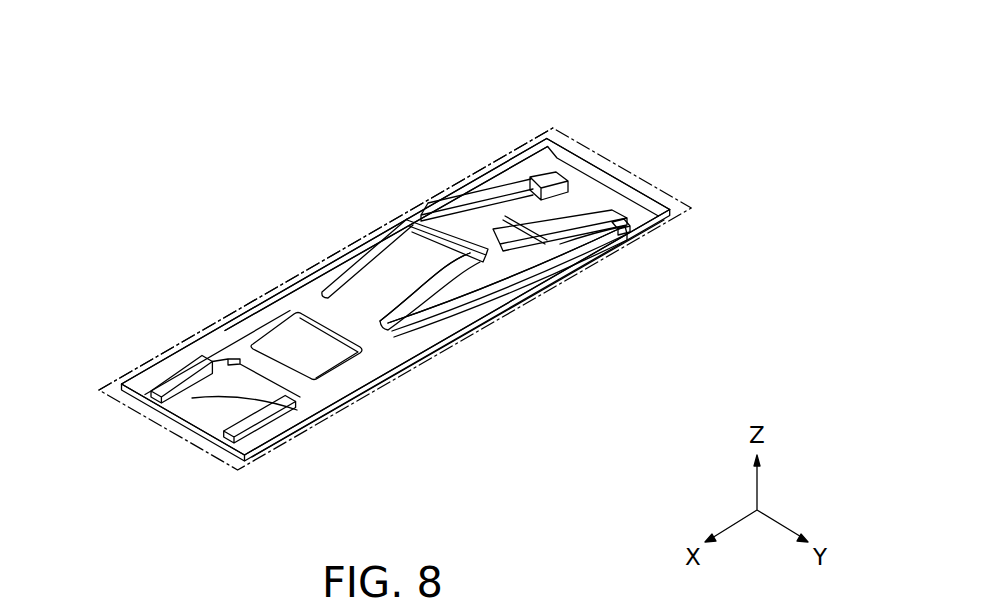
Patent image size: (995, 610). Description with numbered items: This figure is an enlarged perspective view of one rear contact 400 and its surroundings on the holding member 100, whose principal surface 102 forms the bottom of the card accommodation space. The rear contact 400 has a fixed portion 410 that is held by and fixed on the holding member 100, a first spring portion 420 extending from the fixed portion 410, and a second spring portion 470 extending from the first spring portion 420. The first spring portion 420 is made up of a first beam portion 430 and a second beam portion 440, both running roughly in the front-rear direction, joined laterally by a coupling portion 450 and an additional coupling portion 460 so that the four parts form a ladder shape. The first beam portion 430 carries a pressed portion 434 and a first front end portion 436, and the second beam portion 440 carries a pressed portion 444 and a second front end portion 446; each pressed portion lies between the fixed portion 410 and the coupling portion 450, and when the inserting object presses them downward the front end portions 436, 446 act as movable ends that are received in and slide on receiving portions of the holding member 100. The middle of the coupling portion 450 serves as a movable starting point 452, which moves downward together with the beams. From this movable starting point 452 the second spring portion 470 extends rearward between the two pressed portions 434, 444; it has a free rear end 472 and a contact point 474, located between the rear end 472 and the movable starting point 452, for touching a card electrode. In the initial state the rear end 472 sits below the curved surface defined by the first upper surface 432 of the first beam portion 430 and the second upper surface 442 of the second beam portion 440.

The holding member 100 is at (667, 193).
The principal surface 102 is at (436, 259).
The rear contact 400 is at (533, 175).
The fixed portion 410 is at (617, 185).
The first spring portion 420 is at (386, 206).
The first beam portion 430 is at (367, 250).
The first upper surface 432 is at (410, 216).
The pressed portion 434 is at (482, 197).
The first front end portion 436 is at (173, 388).
The second beam portion 440 is at (452, 300).
The second upper surface 442 is at (478, 280).
The pressed portion 444 is at (560, 247).
The second front end portion 446 is at (253, 440).
The coupling portion 450 is at (323, 305).
The movable starting point 452 is at (340, 317).
The additional coupling portion 460 is at (268, 370).
The second spring portion 470 is at (415, 300).
The rear end 472 is at (510, 247).
The contact point 474 is at (417, 362).